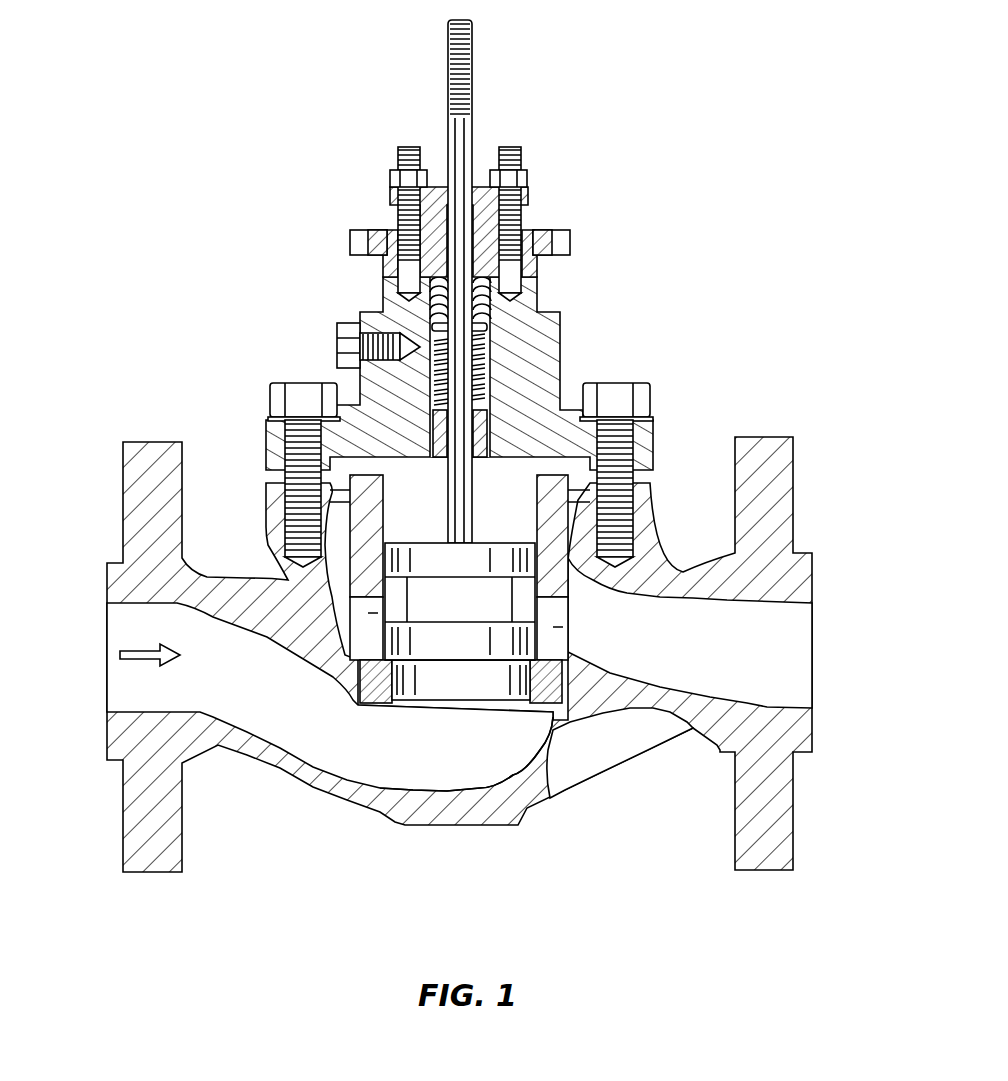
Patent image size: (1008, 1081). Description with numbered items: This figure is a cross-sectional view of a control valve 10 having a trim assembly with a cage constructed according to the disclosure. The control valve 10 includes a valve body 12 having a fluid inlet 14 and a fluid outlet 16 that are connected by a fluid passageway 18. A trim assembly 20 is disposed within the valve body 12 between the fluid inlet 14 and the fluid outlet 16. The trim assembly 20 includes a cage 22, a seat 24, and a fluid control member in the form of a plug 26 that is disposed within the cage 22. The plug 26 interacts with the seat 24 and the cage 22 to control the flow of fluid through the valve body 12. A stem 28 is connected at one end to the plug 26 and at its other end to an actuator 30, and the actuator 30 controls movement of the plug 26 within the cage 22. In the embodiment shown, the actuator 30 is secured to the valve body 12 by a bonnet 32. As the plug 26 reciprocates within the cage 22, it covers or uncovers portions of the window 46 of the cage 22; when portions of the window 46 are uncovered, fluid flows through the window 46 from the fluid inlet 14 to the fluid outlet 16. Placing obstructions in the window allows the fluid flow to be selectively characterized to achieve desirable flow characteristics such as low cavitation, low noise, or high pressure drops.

The control valve 10 is at (622, 88).
The valve body 12 is at (818, 578).
The fluid inlet 14 is at (112, 636).
The fluid outlet 16 is at (798, 660).
The fluid passageway 18 is at (394, 754).
The trim assembly 20 is at (436, 522).
The cage 22 is at (560, 523).
The seat 24 is at (430, 663).
The plug 26 is at (473, 647).
The stem 28 is at (457, 422).
The actuator 30 is at (459, 357).
The bonnet 32 is at (545, 333).
The window 46 is at (555, 627).